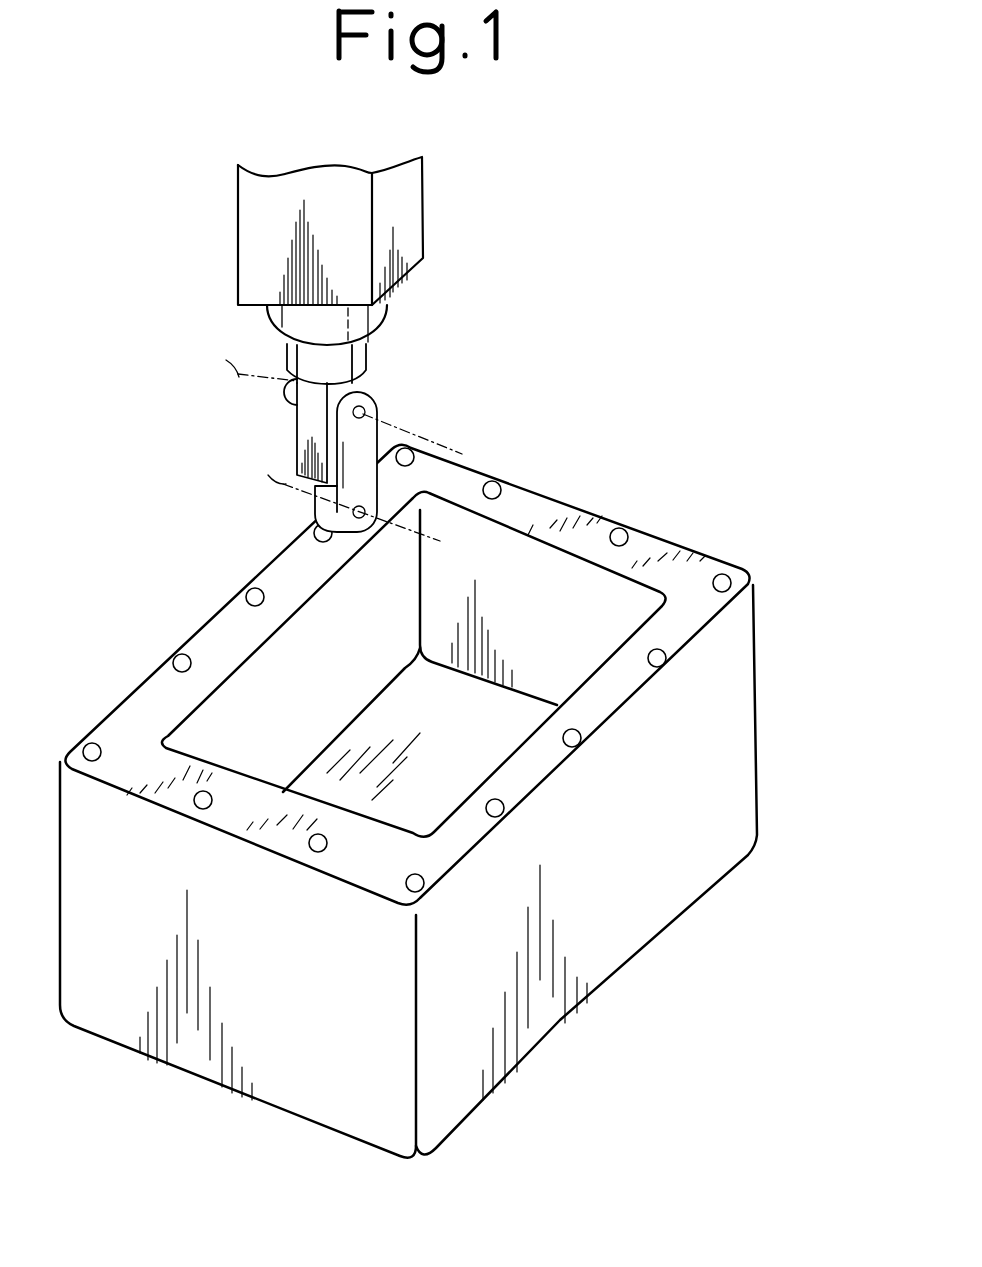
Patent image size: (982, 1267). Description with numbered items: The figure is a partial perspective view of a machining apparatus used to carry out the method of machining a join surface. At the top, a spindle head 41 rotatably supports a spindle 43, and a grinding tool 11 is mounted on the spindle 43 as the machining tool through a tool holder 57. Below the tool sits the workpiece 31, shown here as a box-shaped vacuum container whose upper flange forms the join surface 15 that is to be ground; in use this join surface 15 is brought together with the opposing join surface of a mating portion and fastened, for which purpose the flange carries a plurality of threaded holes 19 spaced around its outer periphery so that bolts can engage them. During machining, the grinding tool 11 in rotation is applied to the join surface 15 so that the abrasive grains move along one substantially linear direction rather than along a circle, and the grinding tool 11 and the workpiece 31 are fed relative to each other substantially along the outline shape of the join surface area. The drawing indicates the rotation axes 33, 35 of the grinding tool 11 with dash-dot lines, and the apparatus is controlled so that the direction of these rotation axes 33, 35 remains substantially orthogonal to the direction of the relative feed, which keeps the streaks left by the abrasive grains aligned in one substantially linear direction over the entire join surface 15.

The grinding tool 11 is at (245, 432).
The join surface 15 is at (606, 703).
The threaded hole 19 is at (727, 581).
The workpiece 31 is at (608, 503).
The rotation axis 33 is at (211, 378).
The rotation axis 35 is at (283, 490).
The spindle head 41 is at (402, 240).
The spindle 43 is at (387, 303).
The tool holder 57 is at (358, 353).